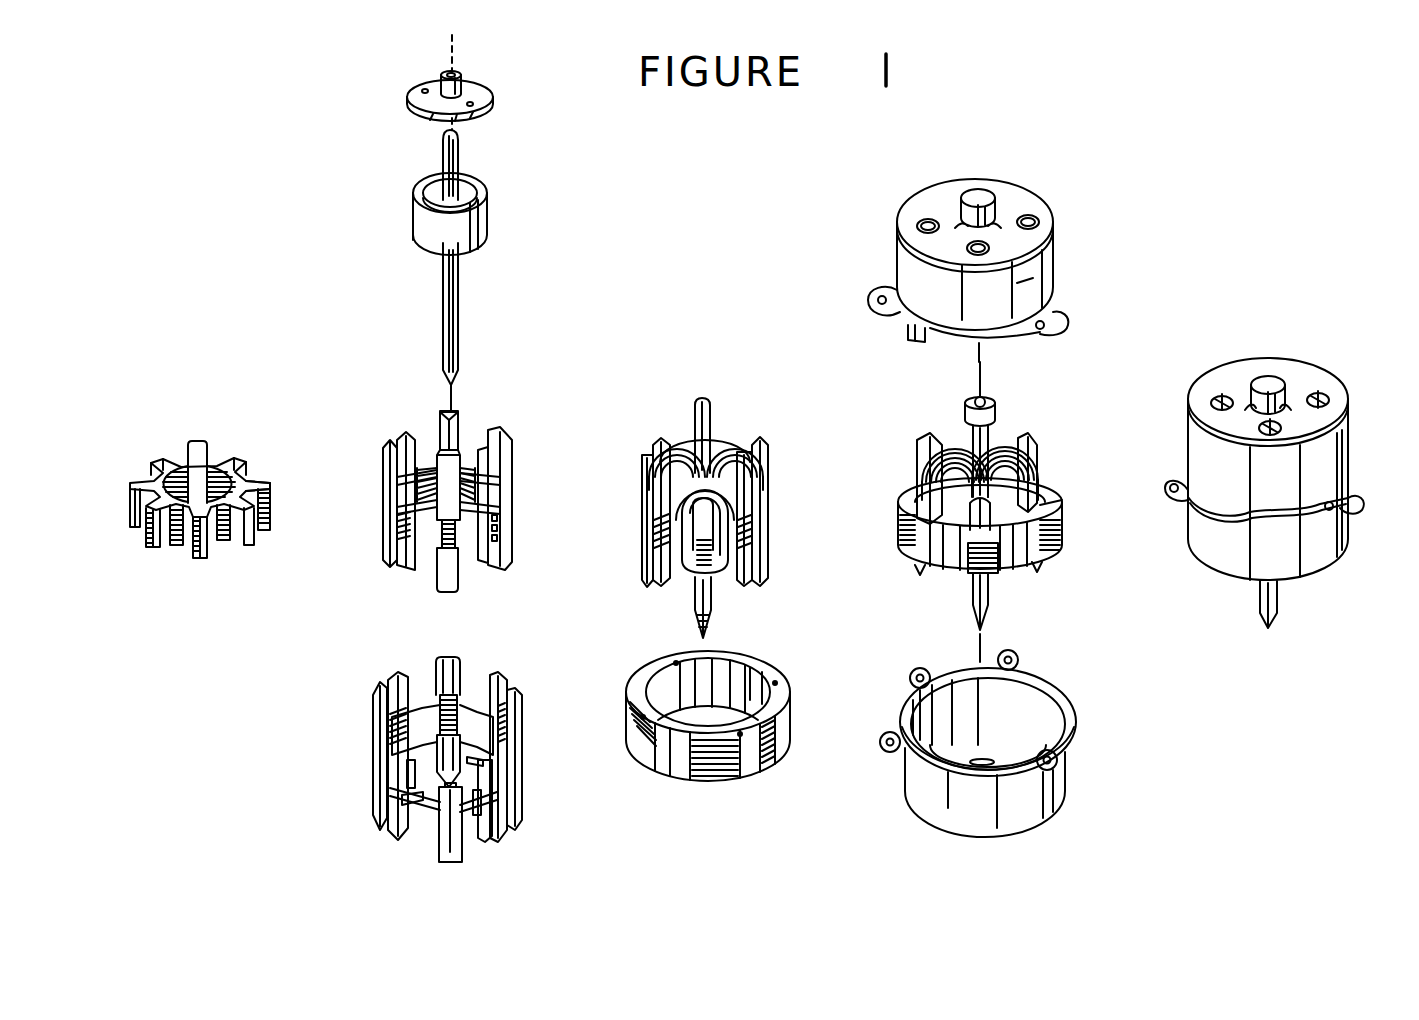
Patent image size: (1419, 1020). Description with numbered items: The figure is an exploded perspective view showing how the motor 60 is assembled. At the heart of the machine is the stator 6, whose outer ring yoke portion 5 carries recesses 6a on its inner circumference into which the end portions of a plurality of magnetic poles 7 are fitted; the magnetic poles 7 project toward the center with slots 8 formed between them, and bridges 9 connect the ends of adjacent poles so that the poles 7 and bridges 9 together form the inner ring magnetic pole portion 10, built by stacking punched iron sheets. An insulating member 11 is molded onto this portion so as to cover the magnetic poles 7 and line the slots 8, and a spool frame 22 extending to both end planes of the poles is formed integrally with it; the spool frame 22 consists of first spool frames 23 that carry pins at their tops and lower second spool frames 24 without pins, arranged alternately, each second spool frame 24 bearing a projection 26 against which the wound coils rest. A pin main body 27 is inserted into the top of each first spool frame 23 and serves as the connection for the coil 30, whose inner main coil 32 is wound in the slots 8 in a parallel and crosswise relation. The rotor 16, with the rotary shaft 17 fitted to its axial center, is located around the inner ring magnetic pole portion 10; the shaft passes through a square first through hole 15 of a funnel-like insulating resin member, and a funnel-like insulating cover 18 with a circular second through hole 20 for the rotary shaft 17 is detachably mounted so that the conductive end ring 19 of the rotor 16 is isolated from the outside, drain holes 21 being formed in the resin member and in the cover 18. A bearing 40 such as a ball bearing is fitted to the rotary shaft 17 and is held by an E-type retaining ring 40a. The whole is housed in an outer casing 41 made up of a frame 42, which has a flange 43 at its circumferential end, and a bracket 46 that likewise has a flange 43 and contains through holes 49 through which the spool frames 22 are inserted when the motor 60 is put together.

The outer ring yoke portion 5 is at (688, 782).
The stator assembly 6 is at (1048, 482).
The recesses for fittings 6a is at (758, 682).
The magnetic poles 7 is at (268, 481).
The slots 8 is at (218, 452).
The bridges 9 is at (198, 542).
The inner ring magnetic pole portion 10 is at (260, 458).
The insulating member 11 is at (477, 535).
The first through hole 15 is at (447, 808).
The rotor 16 is at (467, 228).
The rotary shaft 17 is at (458, 167).
The insulating cover 18 is at (482, 100).
The end ring 19 is at (487, 185).
The second through hole 20 is at (440, 70).
The drain holes 21 is at (470, 101).
The spool frame 22 is at (458, 411).
The first spool frames 23 is at (462, 432).
The second spool frames 24 is at (510, 430).
The projection 26 is at (417, 445).
The pin main body 27 is at (762, 456).
The coil 30 is at (712, 447).
The main coil 32 is at (722, 562).
The bearing 40 is at (986, 398).
The E-type retaining ring 40a is at (998, 420).
The outer casing 41 is at (1128, 267).
The frame 42 is at (1045, 800).
The flange 43 is at (1058, 322).
The bracket 46 is at (1040, 188).
The through holes 49 is at (1040, 222).
The motor 60 is at (1283, 550).